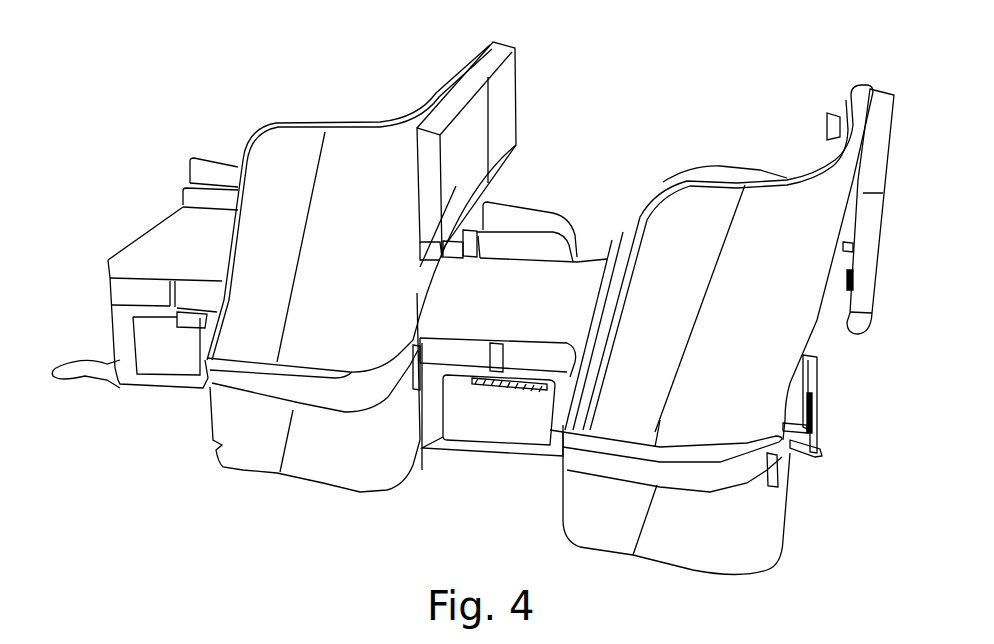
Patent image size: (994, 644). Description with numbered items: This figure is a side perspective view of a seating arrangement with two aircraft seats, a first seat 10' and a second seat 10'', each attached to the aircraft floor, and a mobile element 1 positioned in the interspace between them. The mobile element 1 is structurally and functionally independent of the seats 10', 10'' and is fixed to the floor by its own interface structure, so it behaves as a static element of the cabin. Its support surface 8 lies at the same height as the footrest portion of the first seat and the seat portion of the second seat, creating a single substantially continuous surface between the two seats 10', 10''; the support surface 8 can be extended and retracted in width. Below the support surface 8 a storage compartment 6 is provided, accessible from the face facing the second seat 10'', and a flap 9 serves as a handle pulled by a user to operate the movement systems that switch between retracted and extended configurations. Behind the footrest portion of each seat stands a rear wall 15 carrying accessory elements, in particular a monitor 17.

The mobile element 1 is at (142, 228).
The storage compartment 6 is at (493, 415).
The support surface 8 is at (158, 255).
The flap 9 is at (494, 362).
The first seat 10' is at (313, 259).
The second seat 10'' is at (722, 308).
The rear wall 15 is at (380, 323).
The monitor 17 is at (467, 155).